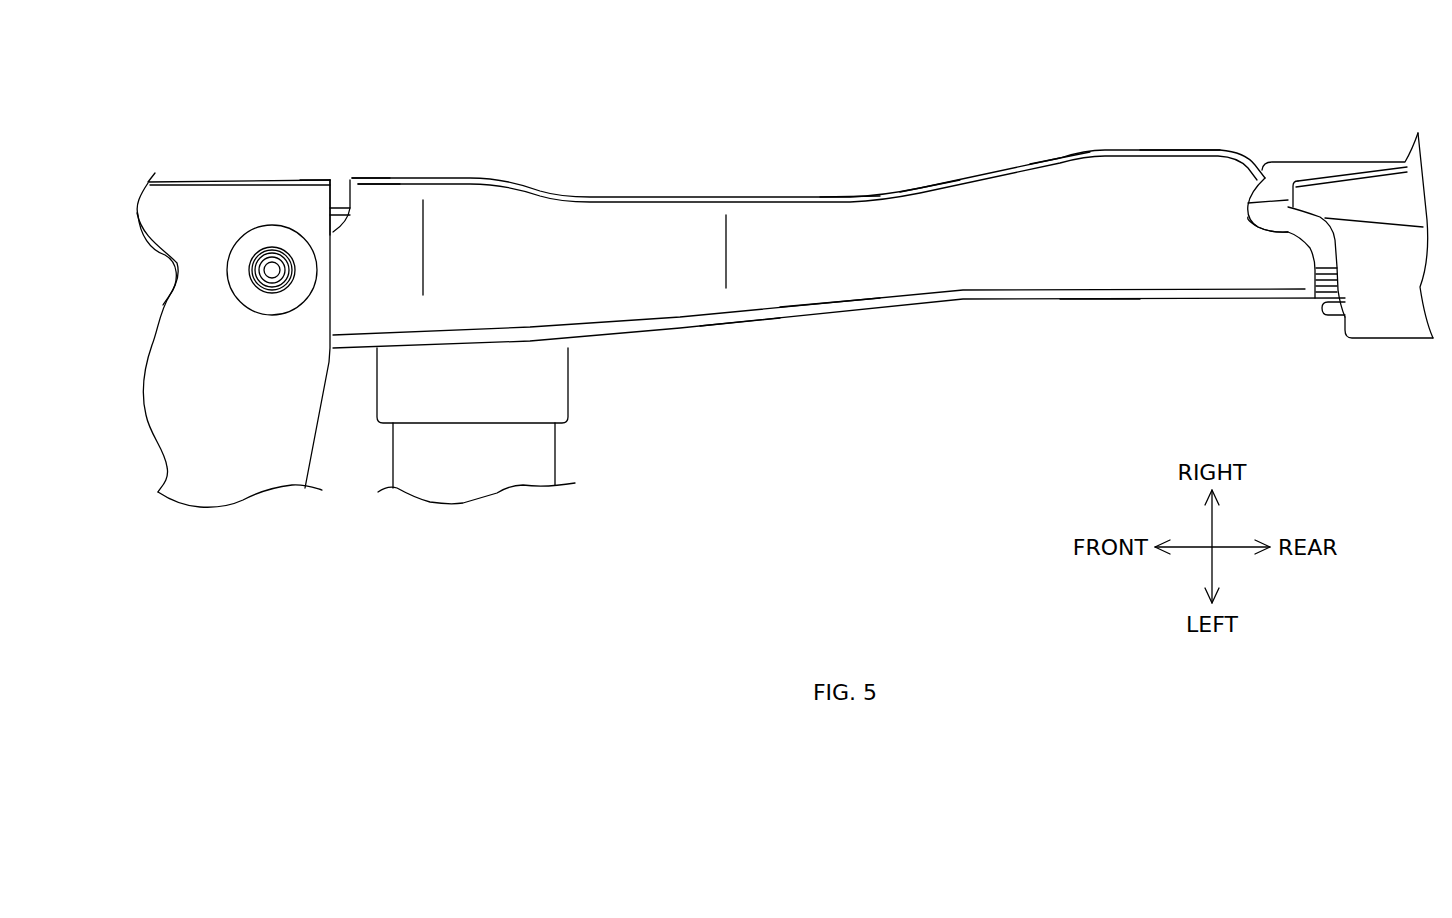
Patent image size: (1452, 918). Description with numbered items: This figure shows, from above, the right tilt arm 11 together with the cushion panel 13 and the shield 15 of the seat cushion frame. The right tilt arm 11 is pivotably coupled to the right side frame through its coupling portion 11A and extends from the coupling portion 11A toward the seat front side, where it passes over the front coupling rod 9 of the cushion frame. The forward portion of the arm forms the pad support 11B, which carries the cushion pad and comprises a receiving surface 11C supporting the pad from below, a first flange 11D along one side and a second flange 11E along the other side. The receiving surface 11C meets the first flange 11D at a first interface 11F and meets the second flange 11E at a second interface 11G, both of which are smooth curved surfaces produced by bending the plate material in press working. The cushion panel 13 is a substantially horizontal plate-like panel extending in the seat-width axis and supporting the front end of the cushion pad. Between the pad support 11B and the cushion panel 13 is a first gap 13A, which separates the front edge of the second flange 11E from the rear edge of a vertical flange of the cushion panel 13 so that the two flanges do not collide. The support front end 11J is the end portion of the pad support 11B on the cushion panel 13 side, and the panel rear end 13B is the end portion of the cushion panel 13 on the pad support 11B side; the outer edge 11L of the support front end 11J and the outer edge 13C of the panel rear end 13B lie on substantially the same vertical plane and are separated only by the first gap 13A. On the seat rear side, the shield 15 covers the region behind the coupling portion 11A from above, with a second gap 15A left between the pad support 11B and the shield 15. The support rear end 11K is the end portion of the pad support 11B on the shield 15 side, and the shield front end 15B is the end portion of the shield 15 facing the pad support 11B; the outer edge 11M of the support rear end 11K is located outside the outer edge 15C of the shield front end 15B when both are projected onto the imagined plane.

The front coupling rod 9 is at (558, 460).
The right tilt arm 11 is at (902, 307).
The coupling portion 11A is at (1297, 302).
The pad support 11B is at (828, 267).
The receiving surface 11C is at (932, 218).
The first flange 11D is at (747, 320).
The second flange 11E is at (853, 195).
The first interface 11F is at (1100, 293).
The second interface 11G is at (1063, 165).
The support front end 11J is at (355, 205).
The support rear end 11K is at (1280, 172).
The outer edge of support front end 11L is at (352, 178).
The outer edge of support rear end 11M is at (1180, 150).
The cushion panel 13 is at (257, 458).
The first gap 13A is at (338, 194).
The panel rear end 13B is at (318, 204).
The outer edge of panel rear end 13C is at (318, 180).
The shield 15 is at (1373, 340).
The second gap 15A is at (1262, 218).
The shield front end 15B is at (1280, 205).
The outer edge of shield front end 15C is at (1290, 160).